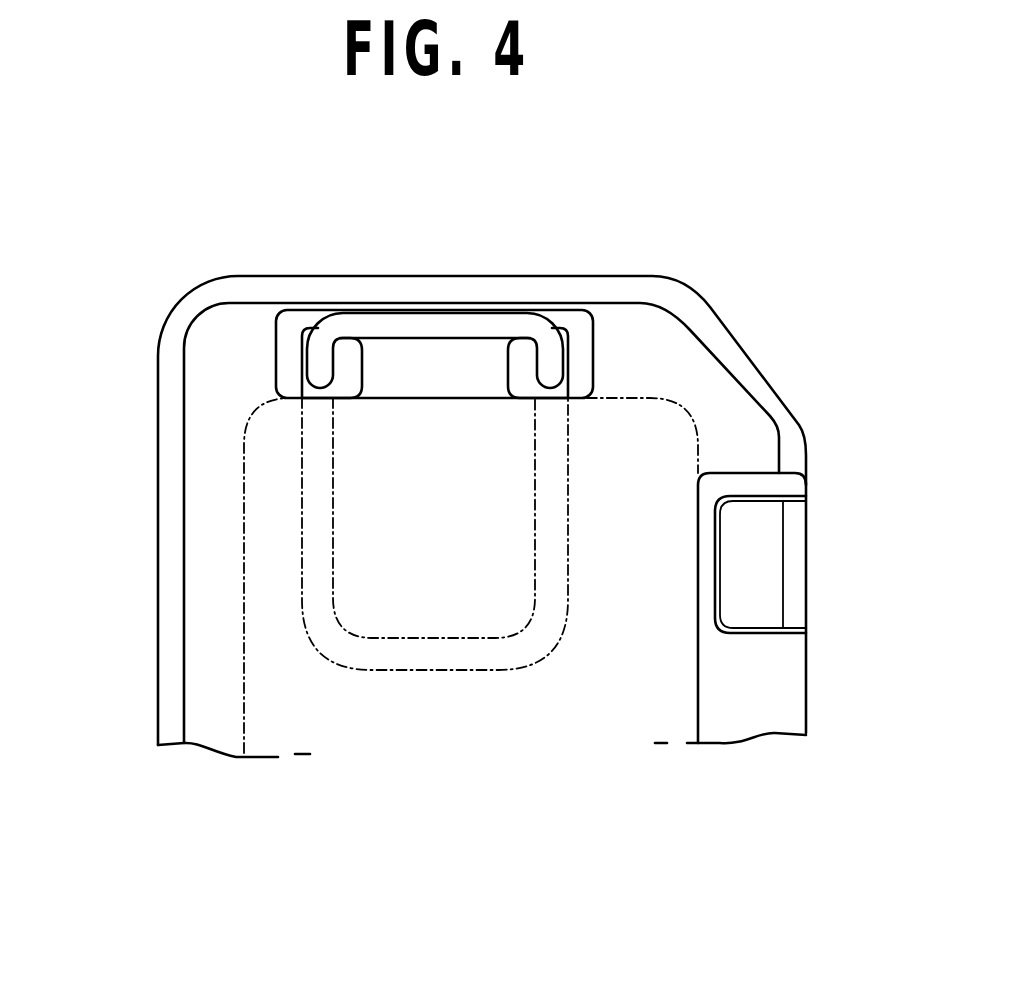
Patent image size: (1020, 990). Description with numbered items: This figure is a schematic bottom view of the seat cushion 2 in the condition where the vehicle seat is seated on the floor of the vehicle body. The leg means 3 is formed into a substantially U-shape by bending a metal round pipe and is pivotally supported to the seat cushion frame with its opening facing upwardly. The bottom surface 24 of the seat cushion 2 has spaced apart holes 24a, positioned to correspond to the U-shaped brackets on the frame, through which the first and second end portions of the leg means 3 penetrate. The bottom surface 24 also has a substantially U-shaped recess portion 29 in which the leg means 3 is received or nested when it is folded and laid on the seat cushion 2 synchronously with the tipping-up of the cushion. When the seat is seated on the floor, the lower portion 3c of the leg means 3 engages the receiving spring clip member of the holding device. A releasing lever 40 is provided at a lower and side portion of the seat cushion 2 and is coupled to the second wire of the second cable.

The seat cushion 2 is at (614, 277).
The leg means 3 is at (394, 309).
The lower portion of the leg means 3c is at (466, 323).
The holes 24a is at (313, 393).
The bottom surface 24 is at (627, 685).
The U-shaped recess portion 29 is at (399, 660).
The releasing lever 40 is at (790, 559).